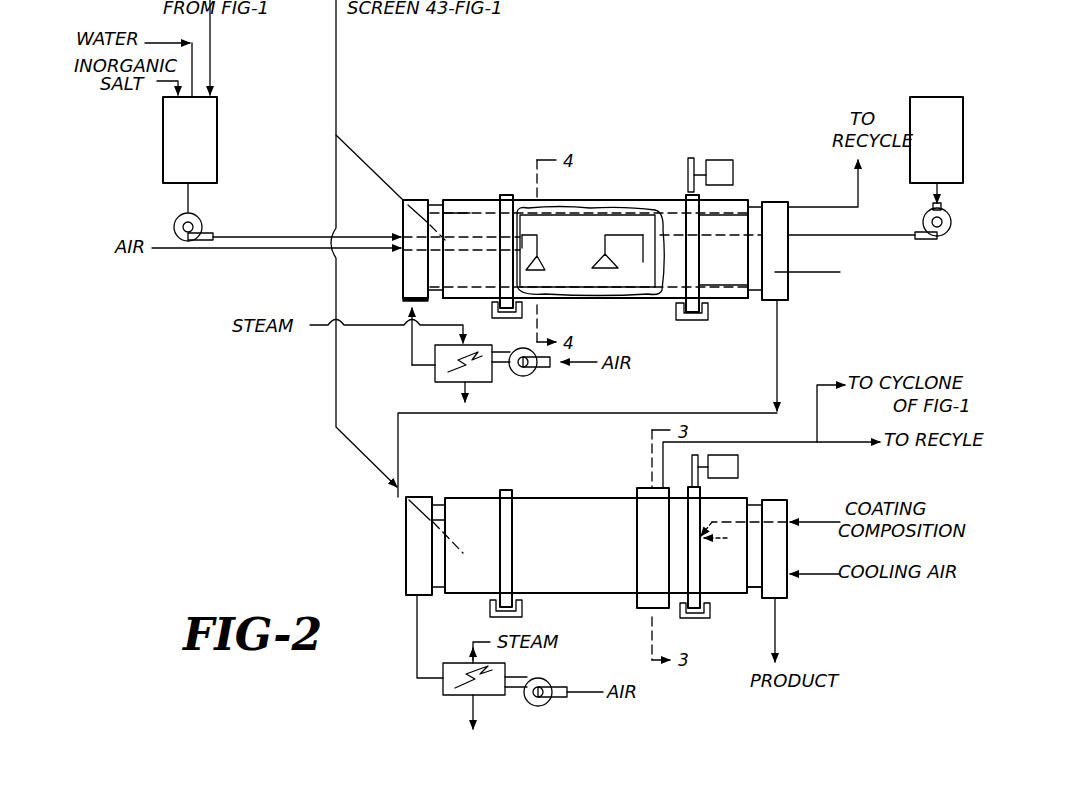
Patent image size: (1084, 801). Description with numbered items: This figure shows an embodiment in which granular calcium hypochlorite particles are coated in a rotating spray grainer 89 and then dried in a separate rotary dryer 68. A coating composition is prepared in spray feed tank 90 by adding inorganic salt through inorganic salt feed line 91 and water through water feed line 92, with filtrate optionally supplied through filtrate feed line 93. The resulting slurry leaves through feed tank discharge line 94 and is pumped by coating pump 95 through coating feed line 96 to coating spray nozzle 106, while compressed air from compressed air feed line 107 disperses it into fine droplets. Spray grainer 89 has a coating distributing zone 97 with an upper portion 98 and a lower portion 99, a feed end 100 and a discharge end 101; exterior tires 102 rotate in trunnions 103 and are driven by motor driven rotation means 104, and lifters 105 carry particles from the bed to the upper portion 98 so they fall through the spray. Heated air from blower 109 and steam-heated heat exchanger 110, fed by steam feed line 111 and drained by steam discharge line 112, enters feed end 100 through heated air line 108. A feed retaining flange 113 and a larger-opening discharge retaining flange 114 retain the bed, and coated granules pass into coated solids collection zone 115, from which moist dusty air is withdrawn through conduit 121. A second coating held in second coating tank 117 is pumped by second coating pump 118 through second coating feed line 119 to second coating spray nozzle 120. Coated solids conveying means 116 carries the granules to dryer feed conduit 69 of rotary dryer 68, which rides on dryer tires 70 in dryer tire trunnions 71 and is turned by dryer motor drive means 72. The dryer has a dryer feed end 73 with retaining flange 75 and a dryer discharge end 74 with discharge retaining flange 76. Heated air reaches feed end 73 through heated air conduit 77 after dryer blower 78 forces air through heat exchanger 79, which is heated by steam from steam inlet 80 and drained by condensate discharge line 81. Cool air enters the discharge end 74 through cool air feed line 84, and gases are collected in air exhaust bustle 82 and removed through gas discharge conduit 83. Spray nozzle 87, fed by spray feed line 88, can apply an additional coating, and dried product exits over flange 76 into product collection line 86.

The rotary dryer 68 is at (570, 500).
The dryer feed conduit 69 is at (336, 382).
The dryer tires 70 is at (508, 492).
The dryer tire trunnions 71 is at (522, 612).
The dryer motor drive means 72 is at (738, 468).
The dryer feed end 73 is at (406, 570).
The dryer discharge end 74 is at (790, 506).
The retaining flange 75 is at (446, 588).
The discharge retaining flange 76 is at (748, 590).
The heated air conduit 77 is at (417, 655).
The dryer blower 78 is at (538, 706).
The heat exchanger 79 is at (453, 697).
The steam inlet 80 is at (473, 641).
The condensate discharge line 81 is at (477, 714).
The air exhaust bustle 82 is at (640, 610).
The gas discharge conduit 83 is at (817, 418).
The cool air feed line 84 is at (825, 578).
The product collection line 86 is at (780, 640).
The spray nozzle 87 is at (723, 540).
The spray feed line 88 is at (819, 528).
The spray grainer 89 is at (660, 200).
The spray feed tank 90 is at (217, 142).
The inorganic salt feed line 91 is at (157, 82).
The water feed line 92 is at (181, 43).
The filtrate feed line 93 is at (212, 62).
The feed tank discharge line 94 is at (190, 204).
The coating pump 95 is at (201, 225).
The coating feed line 96 is at (290, 233).
The coating distributing zone 97 is at (622, 225).
The upper portion 98 is at (582, 213).
The lower portion 99 is at (646, 272).
The feed end 100 is at (403, 273).
The discharge end 101 is at (790, 300).
The exterior tires 102 is at (504, 195).
The trunnions 103 is at (524, 310).
The motor driven rotation means 104 is at (722, 163).
The lifters 105 is at (712, 282).
The coating spray nozzle 106 is at (545, 265).
The compressed air feed line 107 is at (246, 253).
The heated air line 108 is at (412, 345).
The blower 109 is at (523, 376).
The heat exchanger 110 is at (435, 375).
The steam feed line 111 is at (448, 326).
The steam discharge line 112 is at (463, 392).
The feed retaining flange 113 is at (445, 212).
The discharge retaining flange 114 is at (745, 208).
The coated solids collection zone 115 is at (824, 272).
The coated solids conveying means 116 is at (775, 380).
The second coating tank 117 is at (963, 153).
The second coating pump 118 is at (944, 230).
The second coating feed line 119 is at (882, 237).
The second coating spray nozzle 120 is at (610, 268).
The conduit 121 is at (816, 207).